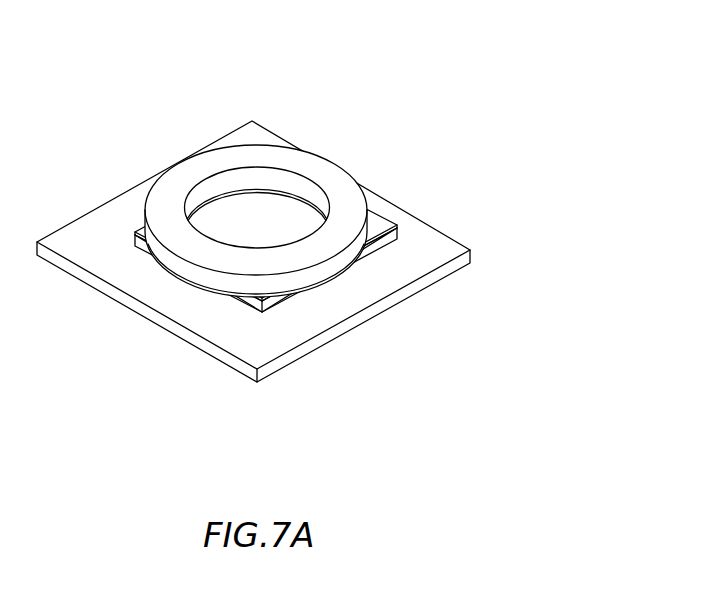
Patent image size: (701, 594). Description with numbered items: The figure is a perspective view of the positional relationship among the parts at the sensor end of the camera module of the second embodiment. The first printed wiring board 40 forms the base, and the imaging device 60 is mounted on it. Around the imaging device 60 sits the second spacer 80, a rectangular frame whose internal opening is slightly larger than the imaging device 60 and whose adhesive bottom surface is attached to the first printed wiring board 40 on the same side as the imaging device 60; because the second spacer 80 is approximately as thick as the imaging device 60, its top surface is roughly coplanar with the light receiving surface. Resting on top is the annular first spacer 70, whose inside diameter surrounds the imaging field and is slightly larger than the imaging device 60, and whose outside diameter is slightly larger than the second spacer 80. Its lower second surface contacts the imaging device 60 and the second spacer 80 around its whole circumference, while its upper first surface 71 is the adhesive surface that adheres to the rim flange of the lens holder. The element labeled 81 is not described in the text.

The first printed wiring board 40 is at (215, 325).
The imaging device 60 is at (267, 213).
The first spacer 70 is at (242, 157).
The first surface 71 is at (195, 287).
The second spacer 80 is at (379, 223).
The adhesive sheet 81 is at (278, 305).